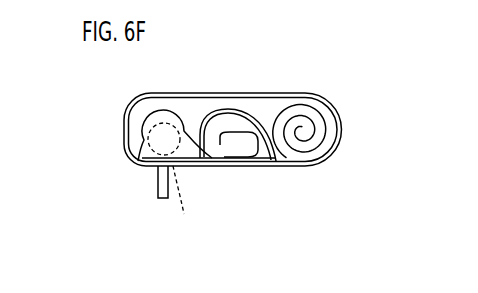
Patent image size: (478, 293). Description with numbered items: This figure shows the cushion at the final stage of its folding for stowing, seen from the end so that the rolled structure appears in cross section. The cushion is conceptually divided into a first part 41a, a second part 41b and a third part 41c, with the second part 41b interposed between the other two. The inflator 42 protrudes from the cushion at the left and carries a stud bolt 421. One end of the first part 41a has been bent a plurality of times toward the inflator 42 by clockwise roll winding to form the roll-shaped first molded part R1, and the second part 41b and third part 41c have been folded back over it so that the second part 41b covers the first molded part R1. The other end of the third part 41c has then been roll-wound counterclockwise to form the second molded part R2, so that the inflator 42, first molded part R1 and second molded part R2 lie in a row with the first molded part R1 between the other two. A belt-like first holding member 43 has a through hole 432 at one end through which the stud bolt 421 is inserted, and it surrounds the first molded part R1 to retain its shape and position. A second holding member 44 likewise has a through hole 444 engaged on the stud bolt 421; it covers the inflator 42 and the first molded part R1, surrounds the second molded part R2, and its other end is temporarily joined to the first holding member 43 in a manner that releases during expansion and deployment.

The first part 41a is at (267, 167).
The second part 41b is at (207, 93).
The third part 41c is at (323, 157).
The inflator 42 is at (138, 153).
The first holding member 43 is at (233, 168).
The second holding member 44 is at (293, 93).
The stud bolt 421 is at (157, 186).
The through hole 432 is at (183, 204).
The through hole 444 is at (157, 172).
The first molded part R1 is at (248, 136).
The second molded part R2 is at (353, 120).